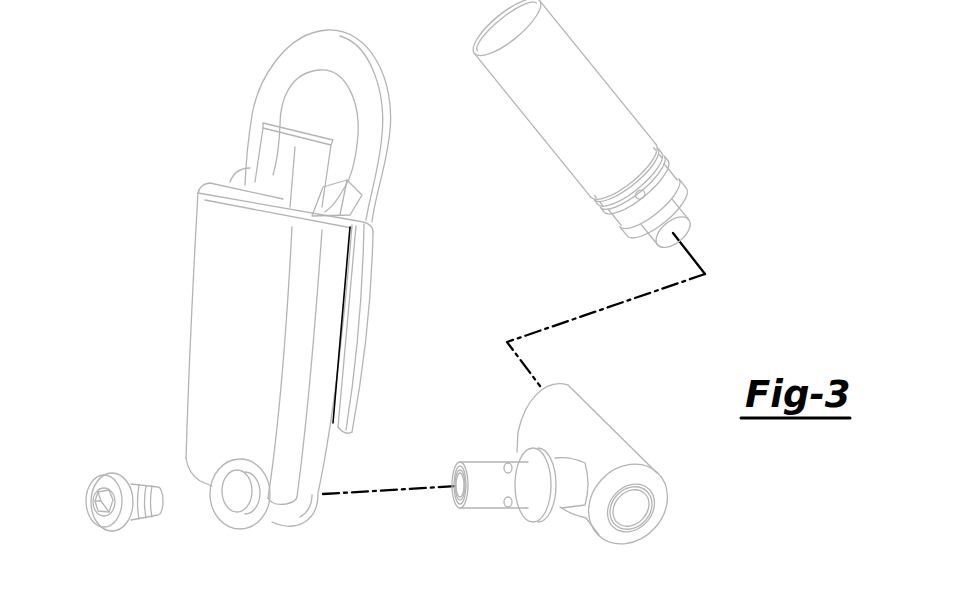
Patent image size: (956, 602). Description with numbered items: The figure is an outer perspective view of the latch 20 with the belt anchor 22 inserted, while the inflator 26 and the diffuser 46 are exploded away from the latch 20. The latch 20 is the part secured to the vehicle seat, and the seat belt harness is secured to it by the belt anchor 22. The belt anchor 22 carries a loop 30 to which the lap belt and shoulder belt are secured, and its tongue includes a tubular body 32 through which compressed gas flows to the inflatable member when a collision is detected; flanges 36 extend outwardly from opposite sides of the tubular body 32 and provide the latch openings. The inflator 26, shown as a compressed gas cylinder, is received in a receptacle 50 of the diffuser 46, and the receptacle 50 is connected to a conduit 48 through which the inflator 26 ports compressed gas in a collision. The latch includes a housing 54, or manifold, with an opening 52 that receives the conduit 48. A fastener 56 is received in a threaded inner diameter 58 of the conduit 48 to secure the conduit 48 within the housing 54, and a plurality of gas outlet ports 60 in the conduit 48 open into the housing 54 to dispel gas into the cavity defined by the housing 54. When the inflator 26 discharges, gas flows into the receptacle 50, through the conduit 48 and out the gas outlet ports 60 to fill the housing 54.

The latch 20 is at (190, 308).
The belt anchor 22 is at (321, 126).
The inflator 26 is at (588, 78).
The loop 30 is at (368, 137).
The tubular body 32 is at (278, 163).
The flanges 36 is at (336, 203).
The diffuser 46 is at (570, 478).
The conduit 48 is at (478, 497).
The receptacle 50 is at (593, 413).
The opening 52 is at (238, 495).
The housing 54 is at (278, 515).
The fastener 56 is at (93, 495).
The threaded inner diameter 58 is at (467, 486).
The gas outlet ports 60 is at (507, 468).